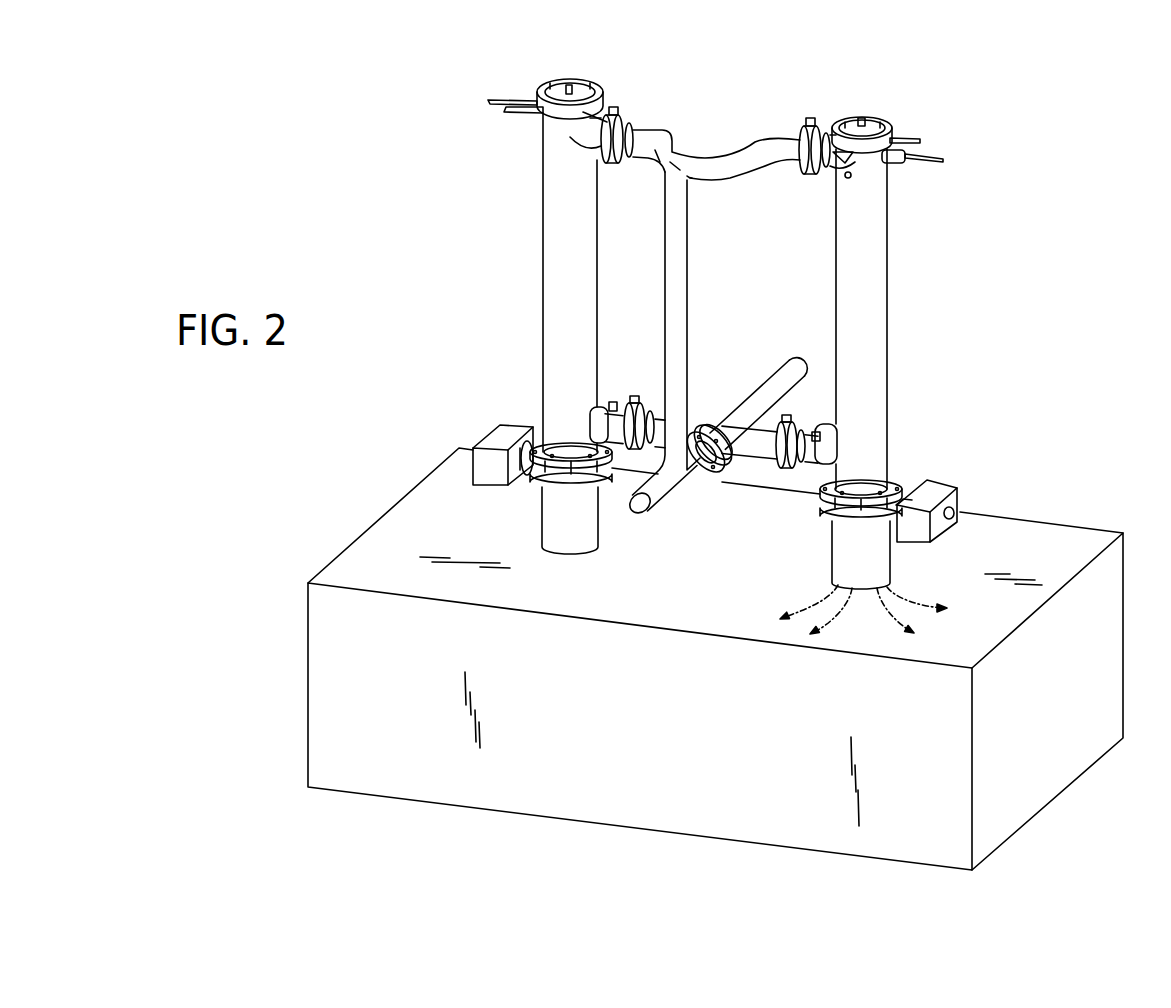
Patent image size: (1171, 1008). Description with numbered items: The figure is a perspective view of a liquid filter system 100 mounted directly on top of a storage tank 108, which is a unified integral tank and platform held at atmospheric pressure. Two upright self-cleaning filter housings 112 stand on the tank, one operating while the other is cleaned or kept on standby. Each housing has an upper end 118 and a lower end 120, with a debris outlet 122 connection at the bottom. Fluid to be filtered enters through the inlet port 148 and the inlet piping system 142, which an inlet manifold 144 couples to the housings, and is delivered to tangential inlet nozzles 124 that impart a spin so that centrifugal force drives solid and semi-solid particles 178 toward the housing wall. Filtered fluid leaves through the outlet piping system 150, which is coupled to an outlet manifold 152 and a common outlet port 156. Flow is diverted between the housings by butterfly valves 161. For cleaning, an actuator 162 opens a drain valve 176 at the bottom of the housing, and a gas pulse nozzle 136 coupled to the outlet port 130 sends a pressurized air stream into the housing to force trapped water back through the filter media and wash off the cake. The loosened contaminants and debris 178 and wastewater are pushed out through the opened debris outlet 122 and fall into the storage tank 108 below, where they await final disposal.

The liquid filter system 100 is at (1058, 128).
The storage tank 108 is at (343, 690).
The filter housing 112 is at (556, 222).
The upper end 118 is at (553, 166).
The lower end 120 is at (564, 431).
The debris outlet 122 is at (556, 515).
The tangential inlet nozzle 124 is at (575, 132).
The outlet port 130 is at (592, 418).
The gas pulse nozzle 136 is at (531, 100).
The inlet piping system 142 is at (649, 135).
The inlet manifold 144 is at (733, 172).
The inlet port 148 is at (633, 514).
The outlet piping system 150 is at (766, 396).
The outlet manifold 152 is at (720, 430).
The common outlet port 156 is at (807, 357).
The butterfly valve 161 is at (722, 462).
The actuator 162 is at (488, 482).
The drain valve 176 is at (527, 462).
The solid and semi-solid particles 178 is at (812, 609).